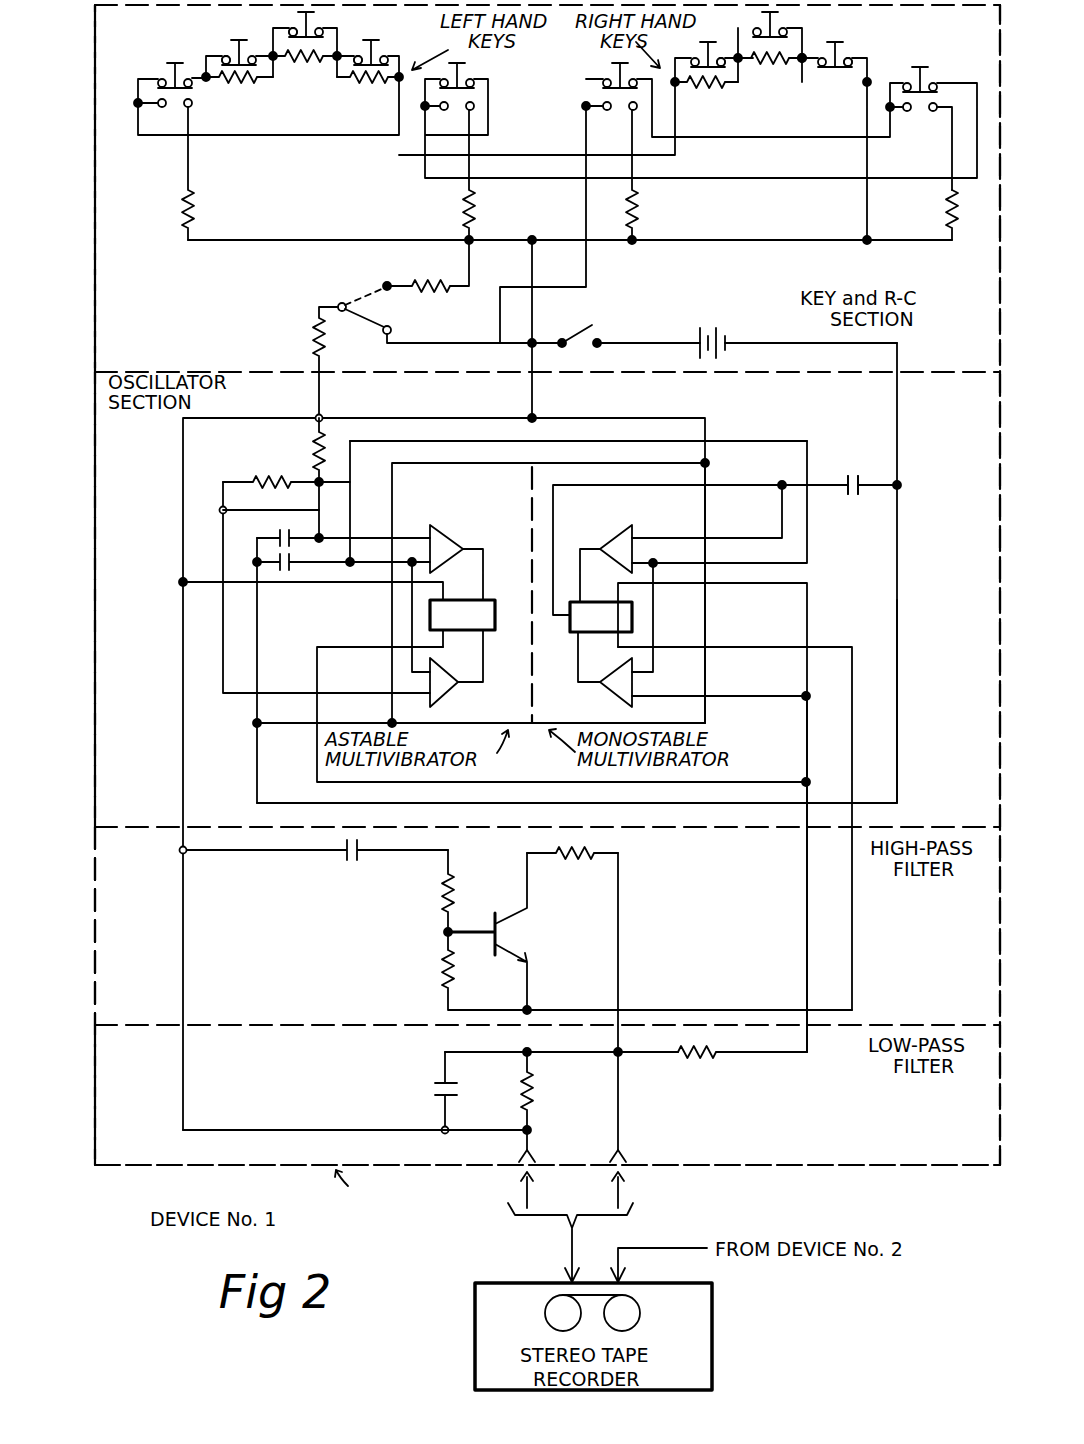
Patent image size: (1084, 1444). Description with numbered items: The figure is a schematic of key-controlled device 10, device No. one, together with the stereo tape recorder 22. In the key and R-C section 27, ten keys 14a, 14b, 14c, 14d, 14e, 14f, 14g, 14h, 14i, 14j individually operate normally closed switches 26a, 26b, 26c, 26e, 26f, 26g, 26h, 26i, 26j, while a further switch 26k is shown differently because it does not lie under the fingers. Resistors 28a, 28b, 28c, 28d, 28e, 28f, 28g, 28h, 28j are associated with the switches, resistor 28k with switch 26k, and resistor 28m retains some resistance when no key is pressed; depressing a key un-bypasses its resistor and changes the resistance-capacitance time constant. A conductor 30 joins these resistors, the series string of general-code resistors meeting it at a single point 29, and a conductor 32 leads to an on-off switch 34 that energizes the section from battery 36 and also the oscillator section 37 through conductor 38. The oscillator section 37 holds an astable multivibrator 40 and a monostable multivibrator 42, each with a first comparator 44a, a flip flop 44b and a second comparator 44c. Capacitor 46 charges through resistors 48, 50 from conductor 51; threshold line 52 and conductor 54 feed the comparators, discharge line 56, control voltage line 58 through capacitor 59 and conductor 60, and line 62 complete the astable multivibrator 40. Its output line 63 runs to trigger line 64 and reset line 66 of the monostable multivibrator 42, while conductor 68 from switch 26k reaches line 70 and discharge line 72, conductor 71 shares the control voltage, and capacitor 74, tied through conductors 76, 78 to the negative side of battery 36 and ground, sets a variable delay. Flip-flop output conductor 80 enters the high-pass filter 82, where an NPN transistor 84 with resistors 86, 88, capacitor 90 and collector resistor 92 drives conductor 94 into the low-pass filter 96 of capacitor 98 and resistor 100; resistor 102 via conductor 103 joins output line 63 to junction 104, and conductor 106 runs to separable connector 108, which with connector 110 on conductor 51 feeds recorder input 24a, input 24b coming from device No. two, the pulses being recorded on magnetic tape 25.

The key-controlled device 10 is at (898, 1178).
The key 14a is at (173, 64).
The key 14b is at (238, 40).
The key 14c is at (310, 14).
The key 14d is at (372, 40).
The key 14e is at (460, 63).
The key 14f is at (620, 63).
The key 14g is at (706, 48).
The key 14h is at (773, 14).
The key 14i is at (838, 48).
The key 14j is at (922, 66).
The stereo tape recorder 22 is at (713, 1337).
The input 24a is at (568, 1250).
The input 24b is at (648, 1248).
The magnetic tape 25 is at (588, 1294).
The switch 26a is at (177, 108).
The switch 26b is at (223, 57).
The switch 26c is at (291, 29).
The switch 26e is at (457, 112).
The switch 26f is at (610, 112).
The switch 26g is at (720, 57).
The switch 26h is at (781, 63).
The switch 26i is at (851, 59).
The switch 26j is at (920, 112).
The switch 26k is at (364, 322).
The key and R-C section 27 is at (107, 285).
The resistor 28a is at (195, 204).
The resistor 28b is at (237, 84).
The resistor 28c is at (300, 62).
The resistor 28d is at (374, 84).
The resistor 28e is at (460, 204).
The resistor 28f is at (640, 204).
The resistor 28g is at (704, 88).
The resistor 28h is at (766, 63).
The resistor 28j is at (924, 212).
The resistor 28k is at (425, 282).
The resistor 28m is at (314, 330).
The point 29 is at (800, 243).
The conductor 30 is at (280, 243).
The conductor 32 is at (530, 264).
The on-off switch 34 is at (584, 330).
The battery 36 is at (703, 328).
The oscillator section 37 is at (102, 637).
The conductor 38 is at (540, 418).
The astable multivibrator 40 is at (392, 614).
The monostable multivibrator 42 is at (710, 623).
The first comparator 44a is at (455, 535).
The flip flop 44b is at (485, 637).
The second comparator 44c is at (446, 700).
The capacitor 46 is at (278, 536).
The resistor 48 is at (312, 455).
The resistor 50 is at (256, 476).
The conductor 51 is at (438, 441).
The threshold line 52 is at (336, 532).
The conductor 54 is at (230, 698).
The discharge line 56 is at (440, 488).
The line 58 is at (365, 570).
The capacitor 59 is at (284, 574).
The conductor 60 is at (256, 658).
The line 62 is at (190, 580).
The output line 63 is at (330, 647).
The trigger line 64 is at (765, 700).
The reset line 66 is at (812, 596).
The conductor 68 is at (440, 402).
The line 70 is at (720, 538).
The conductor 71 is at (660, 441).
The discharge line 72 is at (720, 485).
The capacitor 74 is at (854, 500).
The conductor 76 is at (900, 412).
The conductor 78 is at (900, 674).
The conductor 80 is at (725, 650).
The high-pass filter 82 is at (102, 952).
The NPN transistor 84 is at (505, 930).
The resistor 86 is at (440, 968).
The resistor 88 is at (440, 896).
The capacitor 90 is at (343, 862).
The resistor 92 is at (580, 862).
The conductor 94 is at (622, 950).
The low-pass filter 96 is at (100, 1134).
The capacitor 98 is at (432, 1090).
The resistor 100 is at (532, 1094).
The resistor 102 is at (700, 1056).
The conductor 103 is at (804, 900).
The junction 104 is at (615, 1056).
The conductor 106 is at (622, 1104).
The separable connector 108 is at (624, 1154).
The separable connector 110 is at (515, 1156).